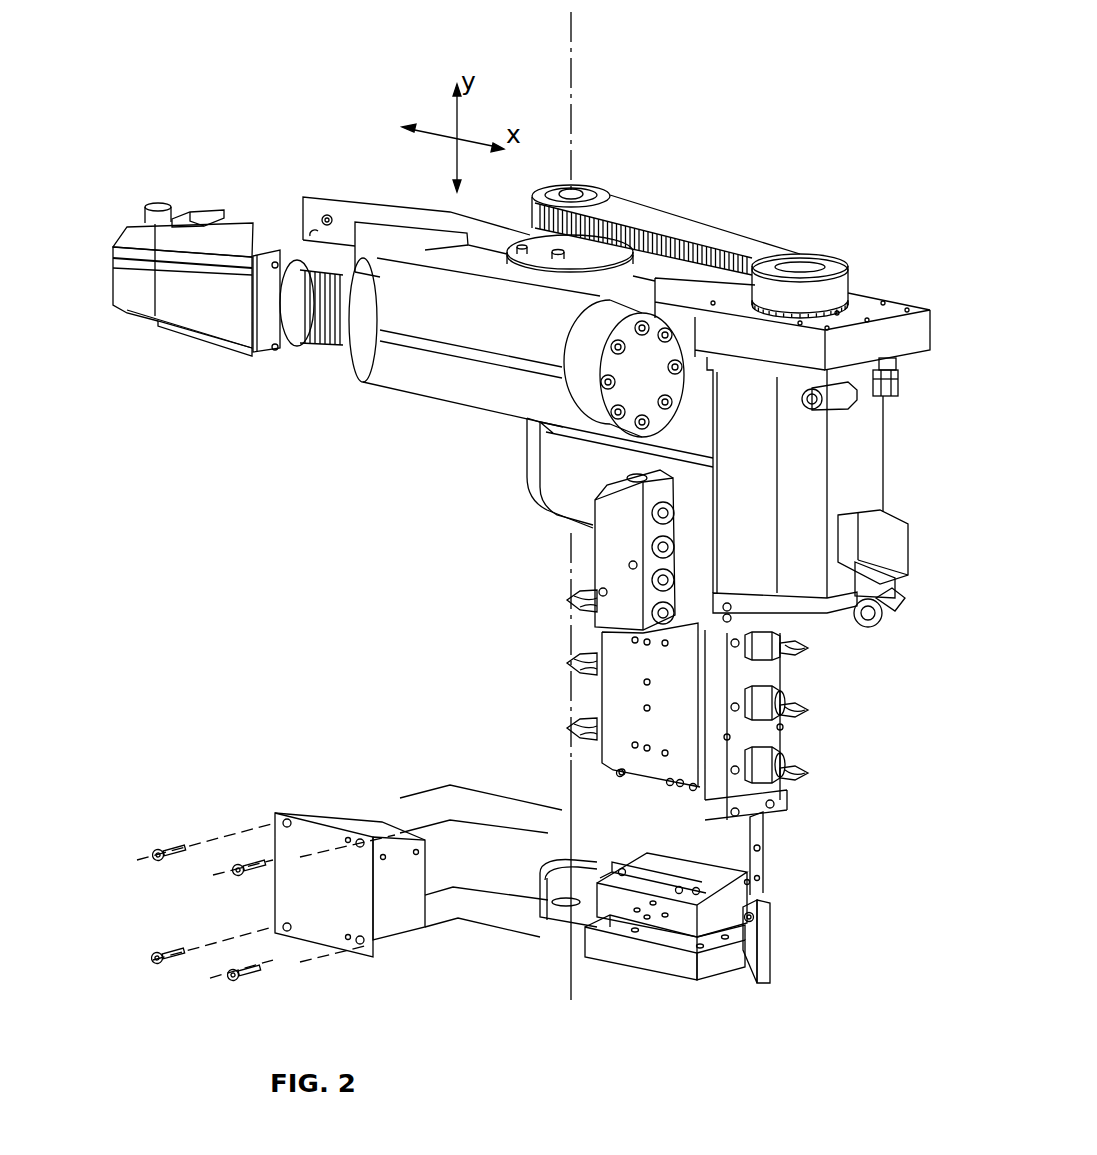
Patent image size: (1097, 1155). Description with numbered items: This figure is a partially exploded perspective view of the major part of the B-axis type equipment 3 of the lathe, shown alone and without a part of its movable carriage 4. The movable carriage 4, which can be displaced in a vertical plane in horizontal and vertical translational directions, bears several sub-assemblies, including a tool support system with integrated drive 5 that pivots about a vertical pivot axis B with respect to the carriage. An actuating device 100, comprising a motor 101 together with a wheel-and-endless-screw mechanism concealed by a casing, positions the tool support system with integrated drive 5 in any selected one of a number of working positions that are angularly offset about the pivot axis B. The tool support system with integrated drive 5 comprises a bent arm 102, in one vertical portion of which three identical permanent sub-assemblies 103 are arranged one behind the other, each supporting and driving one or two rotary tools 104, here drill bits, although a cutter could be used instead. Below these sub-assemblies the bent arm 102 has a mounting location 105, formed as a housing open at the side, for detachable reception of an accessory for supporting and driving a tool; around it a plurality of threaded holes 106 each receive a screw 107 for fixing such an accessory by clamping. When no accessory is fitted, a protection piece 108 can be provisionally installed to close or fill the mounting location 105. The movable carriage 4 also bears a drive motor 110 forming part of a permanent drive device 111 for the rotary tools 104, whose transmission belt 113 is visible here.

The equipment 3 is at (724, 108).
The movable carriage 4 is at (387, 212).
The tool support system with integrated drive 5 is at (625, 756).
The actuating device 100 is at (166, 343).
The motor 101 is at (242, 237).
The bent arm 102 is at (762, 857).
The permanent sub-assembly for supporting and driving 103 is at (800, 664).
The rotary tool 104 is at (573, 725).
The mounting location 105 is at (680, 869).
The threaded holes 106 is at (666, 890).
The screw 107 is at (243, 863).
The protection piece 108 is at (310, 888).
The drive motor 110 is at (752, 408).
The permanent drive device 111 is at (603, 181).
The transmission belt 113 is at (662, 256).
The pivot axis B is at (574, 44).